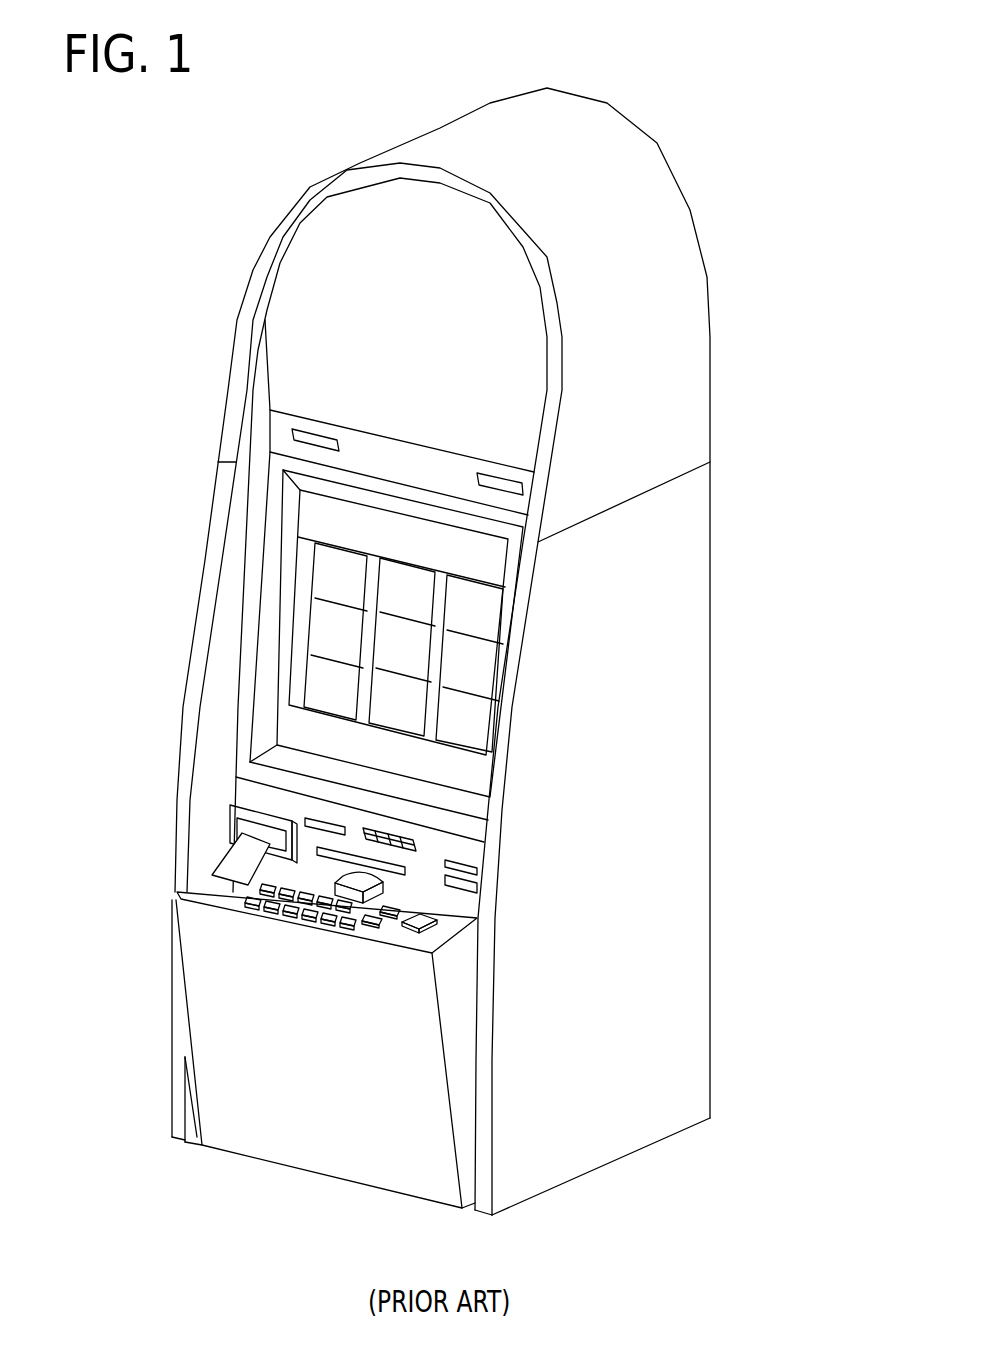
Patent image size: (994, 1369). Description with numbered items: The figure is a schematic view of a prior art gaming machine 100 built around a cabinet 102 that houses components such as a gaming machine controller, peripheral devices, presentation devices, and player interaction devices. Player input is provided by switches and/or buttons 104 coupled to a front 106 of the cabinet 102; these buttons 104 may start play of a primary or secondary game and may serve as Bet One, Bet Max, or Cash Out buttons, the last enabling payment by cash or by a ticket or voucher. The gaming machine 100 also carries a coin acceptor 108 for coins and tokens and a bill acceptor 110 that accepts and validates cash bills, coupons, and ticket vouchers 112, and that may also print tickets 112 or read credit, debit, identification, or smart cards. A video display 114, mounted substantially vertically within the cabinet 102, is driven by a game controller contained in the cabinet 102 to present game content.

The gaming machine 100 is at (708, 38).
The cabinet 102 is at (652, 180).
The buttons 104 is at (283, 912).
The front 106 is at (280, 428).
The coin acceptor 108 is at (357, 893).
The bill acceptor 110 is at (230, 813).
The ticket vouchers 112 is at (232, 868).
The video display 114 is at (470, 716).